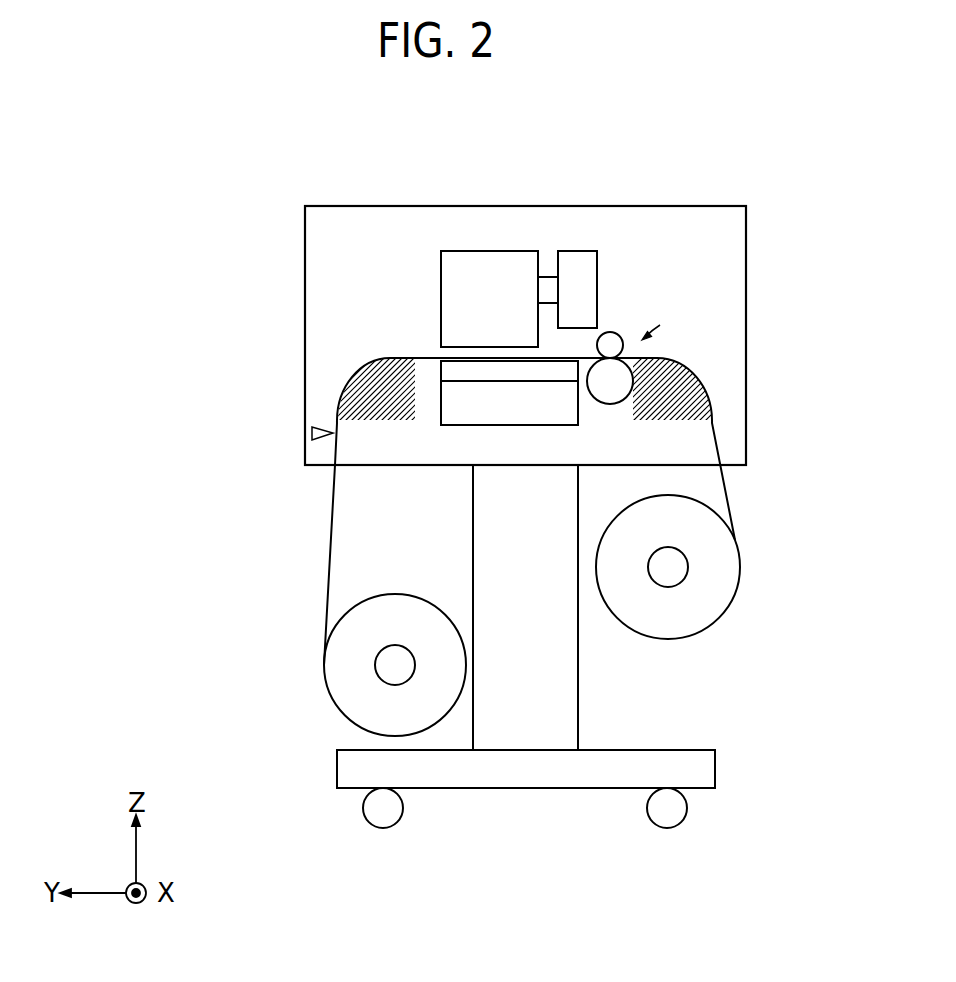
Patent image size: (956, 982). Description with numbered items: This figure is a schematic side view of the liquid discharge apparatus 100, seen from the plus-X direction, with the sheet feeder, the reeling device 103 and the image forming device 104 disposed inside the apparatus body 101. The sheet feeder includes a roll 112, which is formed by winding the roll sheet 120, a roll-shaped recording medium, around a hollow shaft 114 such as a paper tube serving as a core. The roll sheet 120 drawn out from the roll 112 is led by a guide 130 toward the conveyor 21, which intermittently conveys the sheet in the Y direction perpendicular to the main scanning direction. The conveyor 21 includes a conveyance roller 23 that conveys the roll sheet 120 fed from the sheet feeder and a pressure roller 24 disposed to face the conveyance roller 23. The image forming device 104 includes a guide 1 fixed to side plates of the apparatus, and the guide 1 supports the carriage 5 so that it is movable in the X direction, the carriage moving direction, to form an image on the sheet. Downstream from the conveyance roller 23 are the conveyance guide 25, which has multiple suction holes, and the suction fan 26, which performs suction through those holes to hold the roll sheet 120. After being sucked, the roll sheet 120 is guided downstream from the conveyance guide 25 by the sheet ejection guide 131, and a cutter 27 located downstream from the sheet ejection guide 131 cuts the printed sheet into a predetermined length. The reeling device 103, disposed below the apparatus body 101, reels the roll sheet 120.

The liquid discharge apparatus 100 is at (146, 181).
The apparatus body 101 is at (746, 243).
The carriage 5 is at (498, 251).
The guide 1 is at (548, 290).
The pressure roller 24 is at (614, 333).
The conveyance roller 23 is at (610, 381).
The conveyor 21 is at (516, 413).
The conveyance guide 25 is at (520, 361).
The suction fan 26 is at (465, 398).
The roll sheet 120 is at (722, 450).
The sheet ejection guide 131 is at (355, 388).
The guide 130 is at (693, 371).
The image forming device 104 is at (660, 325).
The cutter 27 is at (312, 433).
The reeling device 103 is at (337, 708).
The roll 112 is at (675, 602).
The hollow shaft 114 is at (667, 567).